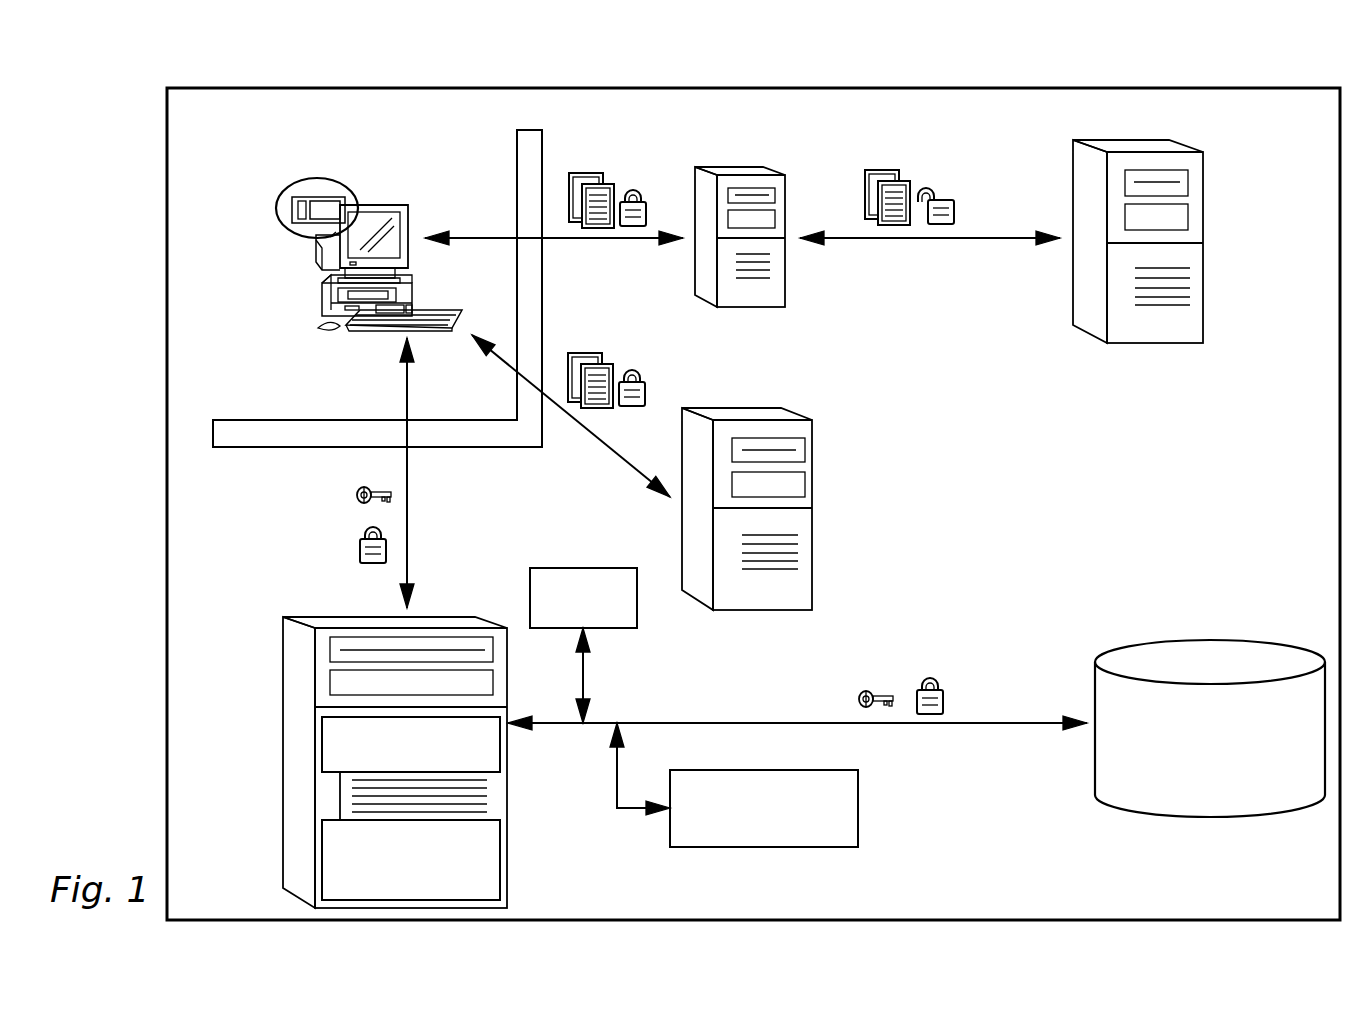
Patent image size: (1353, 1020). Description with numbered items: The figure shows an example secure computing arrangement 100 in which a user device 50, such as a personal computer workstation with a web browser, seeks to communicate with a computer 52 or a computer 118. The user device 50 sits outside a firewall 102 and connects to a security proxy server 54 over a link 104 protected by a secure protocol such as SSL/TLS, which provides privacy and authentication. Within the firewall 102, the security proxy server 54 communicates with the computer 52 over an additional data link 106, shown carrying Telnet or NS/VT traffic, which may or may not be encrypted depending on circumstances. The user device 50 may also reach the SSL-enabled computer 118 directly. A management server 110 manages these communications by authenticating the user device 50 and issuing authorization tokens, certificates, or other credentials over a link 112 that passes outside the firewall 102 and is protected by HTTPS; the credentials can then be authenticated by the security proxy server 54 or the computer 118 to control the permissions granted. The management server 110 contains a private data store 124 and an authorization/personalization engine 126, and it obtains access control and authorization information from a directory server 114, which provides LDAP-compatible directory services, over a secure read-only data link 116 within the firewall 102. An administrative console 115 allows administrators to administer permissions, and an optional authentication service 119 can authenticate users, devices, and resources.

The secure computing arrangement 100 is at (158, 178).
The user device 50 is at (384, 205).
The firewall 102 is at (430, 449).
The link 104 is at (478, 236).
The security proxy server 54 is at (742, 174).
The data link 106 is at (999, 236).
The computer 52 is at (1140, 143).
The link 112 is at (409, 536).
The computer 118 is at (788, 588).
The administrative console 115 is at (603, 628).
The management server 110 is at (382, 749).
The private data store 124 is at (488, 748).
The authorization/personalization engine 126 is at (488, 884).
The data link 116 is at (998, 720).
The authentication service 119 is at (848, 820).
The directory server 114 is at (1207, 658).